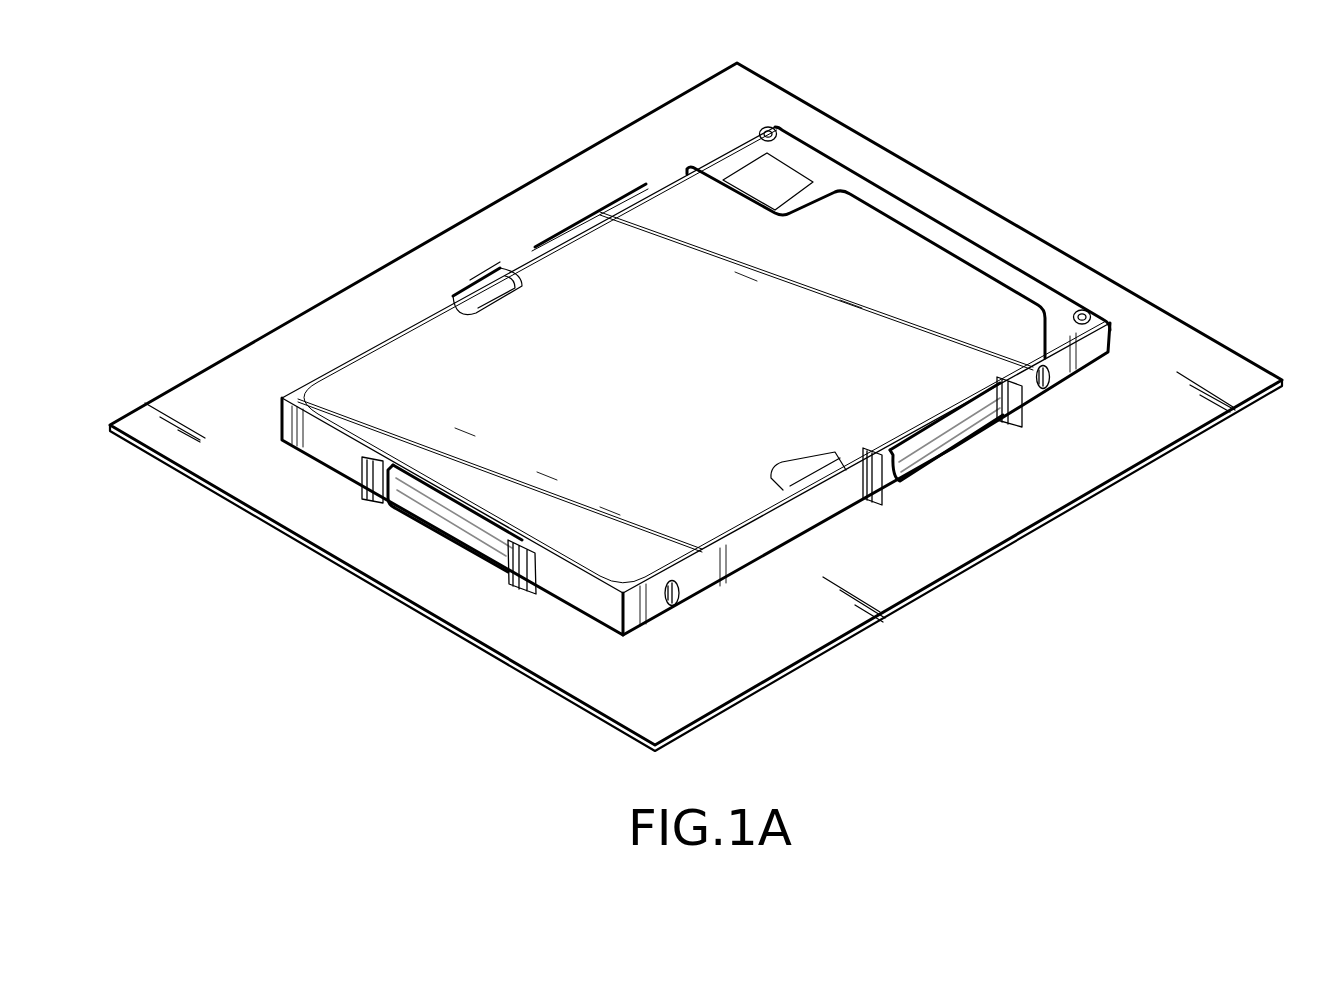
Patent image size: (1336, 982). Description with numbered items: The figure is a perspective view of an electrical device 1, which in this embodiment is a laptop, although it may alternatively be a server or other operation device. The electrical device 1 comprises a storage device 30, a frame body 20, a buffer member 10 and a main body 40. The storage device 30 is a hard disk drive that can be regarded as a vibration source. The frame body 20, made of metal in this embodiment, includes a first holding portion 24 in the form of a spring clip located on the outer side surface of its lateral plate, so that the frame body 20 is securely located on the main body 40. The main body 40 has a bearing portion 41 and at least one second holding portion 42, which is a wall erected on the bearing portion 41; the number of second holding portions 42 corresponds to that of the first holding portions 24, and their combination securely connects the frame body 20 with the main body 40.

The electrical device 1 is at (1318, 86).
The buffer member 10 is at (680, 602).
The frame body 20 is at (825, 526).
The first holding portion 24 is at (572, 237).
The storage device 30 is at (978, 234).
The main body 40 is at (869, 637).
The bearing portion 41 is at (968, 532).
The second holding portion 42 is at (371, 477).